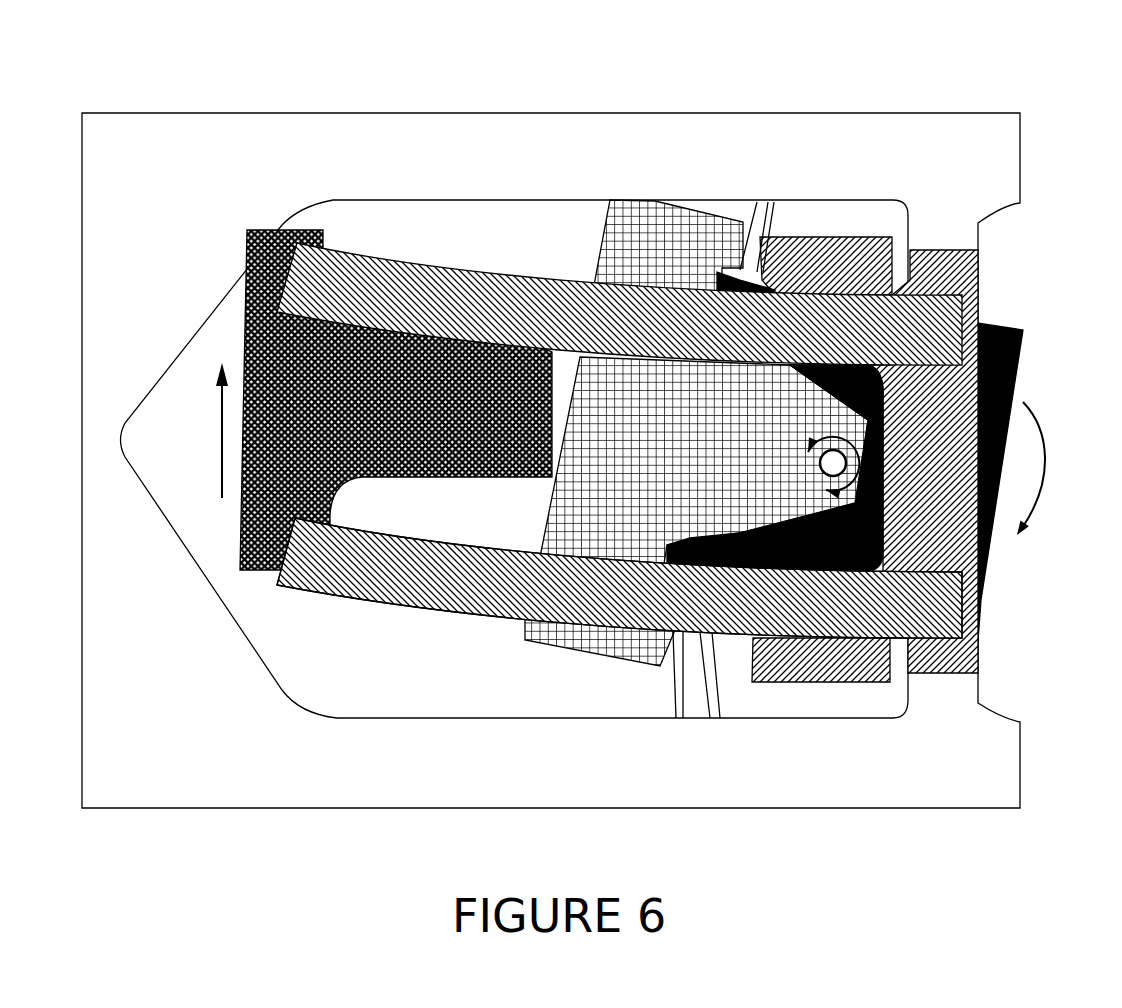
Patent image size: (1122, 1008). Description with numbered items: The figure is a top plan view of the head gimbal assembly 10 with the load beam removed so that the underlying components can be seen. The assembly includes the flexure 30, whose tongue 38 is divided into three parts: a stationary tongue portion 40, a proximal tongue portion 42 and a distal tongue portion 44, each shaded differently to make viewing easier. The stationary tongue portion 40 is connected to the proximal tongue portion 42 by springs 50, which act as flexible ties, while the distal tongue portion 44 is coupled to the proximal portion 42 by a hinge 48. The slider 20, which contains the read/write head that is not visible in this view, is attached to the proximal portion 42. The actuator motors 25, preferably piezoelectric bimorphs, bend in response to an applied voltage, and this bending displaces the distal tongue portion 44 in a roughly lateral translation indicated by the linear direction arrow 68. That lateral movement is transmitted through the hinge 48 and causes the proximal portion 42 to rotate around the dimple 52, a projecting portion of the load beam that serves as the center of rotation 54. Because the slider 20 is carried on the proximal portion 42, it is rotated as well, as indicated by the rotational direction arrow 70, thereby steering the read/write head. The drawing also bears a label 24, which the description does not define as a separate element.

The head gimbal assembly 10 is at (262, 102).
The slider 20 is at (997, 366).
The lower plate member 24 is at (350, 618).
The actuator motors 25 is at (526, 310).
The flexure 30 is at (172, 209).
The tongue 38 is at (527, 662).
The stationary tongue portion 40 is at (937, 525).
The proximal tongue portion 42 is at (627, 270).
The distal tongue portion 44 is at (438, 458).
The hinge 48 is at (558, 420).
The springs 50 is at (676, 680).
The dimple 52 is at (880, 420).
The center of rotation 54 is at (836, 392).
The linear direction arrow 68 is at (222, 467).
The rotational direction arrow 70 is at (840, 462).